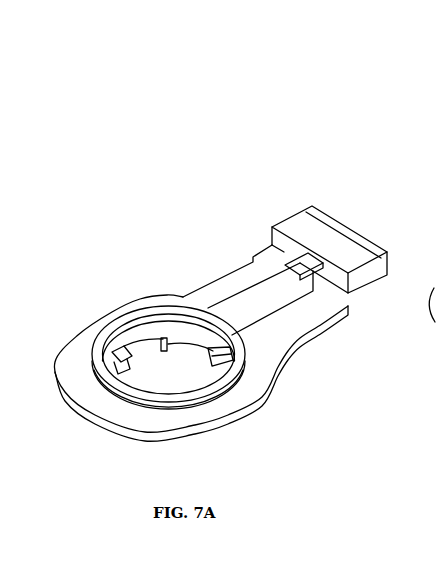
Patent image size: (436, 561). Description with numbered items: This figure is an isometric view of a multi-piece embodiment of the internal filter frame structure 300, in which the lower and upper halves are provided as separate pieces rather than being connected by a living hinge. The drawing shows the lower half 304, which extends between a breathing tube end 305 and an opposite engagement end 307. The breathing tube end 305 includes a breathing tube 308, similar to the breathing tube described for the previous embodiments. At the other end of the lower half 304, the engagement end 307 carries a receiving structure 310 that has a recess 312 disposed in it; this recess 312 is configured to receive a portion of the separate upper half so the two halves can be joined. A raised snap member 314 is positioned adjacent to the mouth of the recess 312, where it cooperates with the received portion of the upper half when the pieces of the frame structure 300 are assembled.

The frame structure 300 is at (176, 93).
The lower half 304 is at (167, 296).
The breathing tube end 305 is at (57, 288).
The engagement end 307 is at (270, 173).
The breathing tube 308 is at (143, 383).
The receiving structure 310 is at (334, 220).
The recess 312 is at (278, 242).
The raised snap member 314 is at (305, 270).